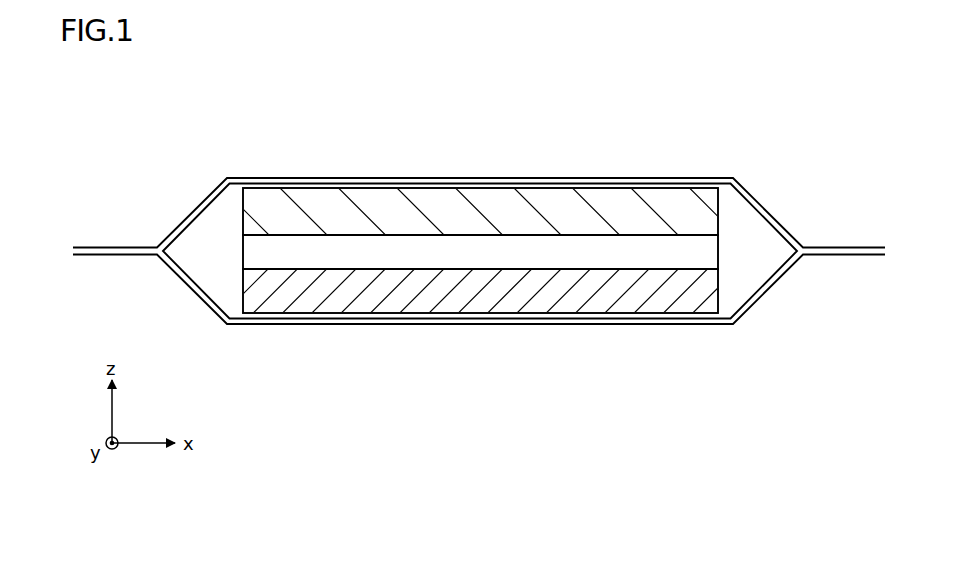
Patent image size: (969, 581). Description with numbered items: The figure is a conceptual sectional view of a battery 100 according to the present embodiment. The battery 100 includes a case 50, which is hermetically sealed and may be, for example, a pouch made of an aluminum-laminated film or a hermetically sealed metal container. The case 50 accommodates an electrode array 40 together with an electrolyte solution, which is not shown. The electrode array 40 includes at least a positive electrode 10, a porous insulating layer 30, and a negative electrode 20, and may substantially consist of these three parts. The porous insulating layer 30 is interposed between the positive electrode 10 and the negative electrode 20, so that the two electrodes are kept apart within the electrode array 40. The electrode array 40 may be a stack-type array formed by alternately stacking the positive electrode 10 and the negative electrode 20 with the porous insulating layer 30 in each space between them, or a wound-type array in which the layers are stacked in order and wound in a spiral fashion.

The battery 100 is at (221, 126).
The case 50 is at (763, 200).
The electrode array 40 is at (380, 375).
The positive electrode 10 is at (292, 222).
The porous insulating layer 30 is at (327, 250).
The negative electrode 20 is at (367, 292).